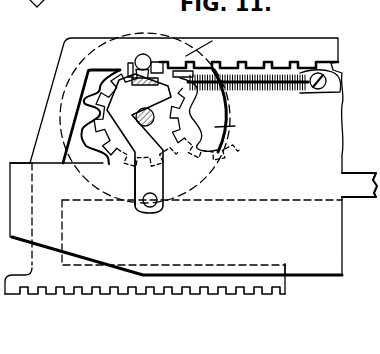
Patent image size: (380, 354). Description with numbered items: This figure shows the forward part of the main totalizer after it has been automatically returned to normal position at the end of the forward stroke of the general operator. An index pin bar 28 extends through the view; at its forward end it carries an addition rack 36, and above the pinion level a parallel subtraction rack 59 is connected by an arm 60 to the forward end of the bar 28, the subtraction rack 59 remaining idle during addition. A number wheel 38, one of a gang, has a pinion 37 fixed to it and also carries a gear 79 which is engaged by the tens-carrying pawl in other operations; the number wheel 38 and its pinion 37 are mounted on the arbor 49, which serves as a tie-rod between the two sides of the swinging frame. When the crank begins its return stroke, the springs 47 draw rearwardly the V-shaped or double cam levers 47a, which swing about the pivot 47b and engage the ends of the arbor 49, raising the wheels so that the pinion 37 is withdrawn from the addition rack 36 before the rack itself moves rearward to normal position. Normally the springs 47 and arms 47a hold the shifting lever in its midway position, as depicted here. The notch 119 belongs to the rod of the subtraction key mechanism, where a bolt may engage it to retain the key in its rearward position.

The notch 119 is at (31, 15).
The arm 60 is at (50, 100).
The arbor 49 is at (151, 118).
The addition rack 36 is at (258, 164).
The pinion 37 is at (190, 117).
The gear 79 is at (212, 103).
The number wheel 38 is at (235, 126).
The subtraction rack 59 is at (243, 66).
The spring 47 is at (300, 89).
The V-shaped cam lever 47a is at (115, 196).
The pivot 47b is at (164, 201).
The index pin bar 28 is at (359, 185).